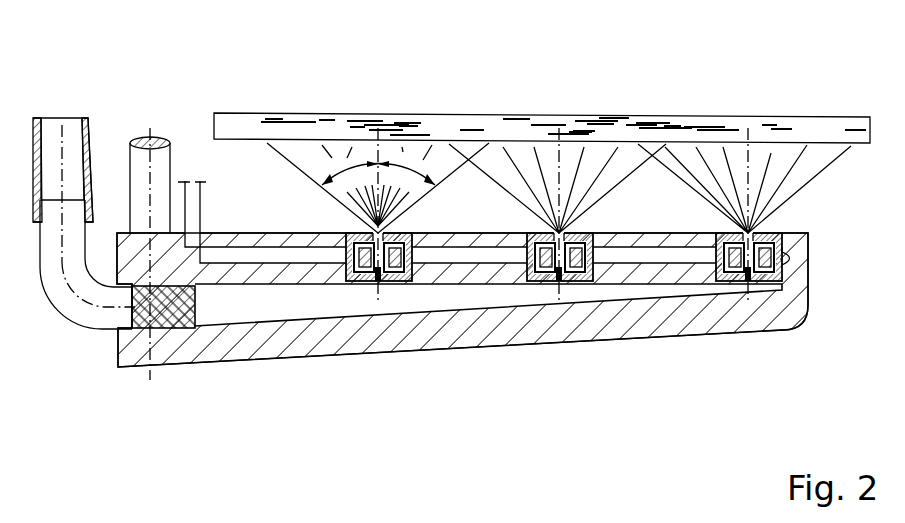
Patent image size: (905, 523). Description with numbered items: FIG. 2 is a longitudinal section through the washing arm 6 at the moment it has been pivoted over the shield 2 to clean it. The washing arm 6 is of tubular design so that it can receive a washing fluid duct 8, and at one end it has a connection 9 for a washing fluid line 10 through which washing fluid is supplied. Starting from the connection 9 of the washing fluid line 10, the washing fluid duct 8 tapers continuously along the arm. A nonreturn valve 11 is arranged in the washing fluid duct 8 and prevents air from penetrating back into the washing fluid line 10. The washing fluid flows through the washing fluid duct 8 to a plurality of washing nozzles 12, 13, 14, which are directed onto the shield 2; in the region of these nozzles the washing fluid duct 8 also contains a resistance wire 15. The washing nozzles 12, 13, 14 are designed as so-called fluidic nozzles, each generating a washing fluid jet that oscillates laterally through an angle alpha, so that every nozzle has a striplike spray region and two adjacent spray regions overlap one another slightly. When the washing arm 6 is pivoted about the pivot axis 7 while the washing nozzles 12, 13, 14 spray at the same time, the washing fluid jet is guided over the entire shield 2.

The shield 2 is at (541, 132).
The washing arm 6 is at (773, 317).
The pivot axis 7 is at (146, 175).
The washing fluid duct 8 is at (312, 303).
The connection 9 is at (74, 308).
The washing fluid line 10 is at (52, 135).
The nonreturn valve 11 is at (175, 316).
The washing nozzle 12 is at (382, 285).
The washing nozzle 13 is at (560, 283).
The washing nozzle 14 is at (747, 277).
The resistance wire 15 is at (272, 260).